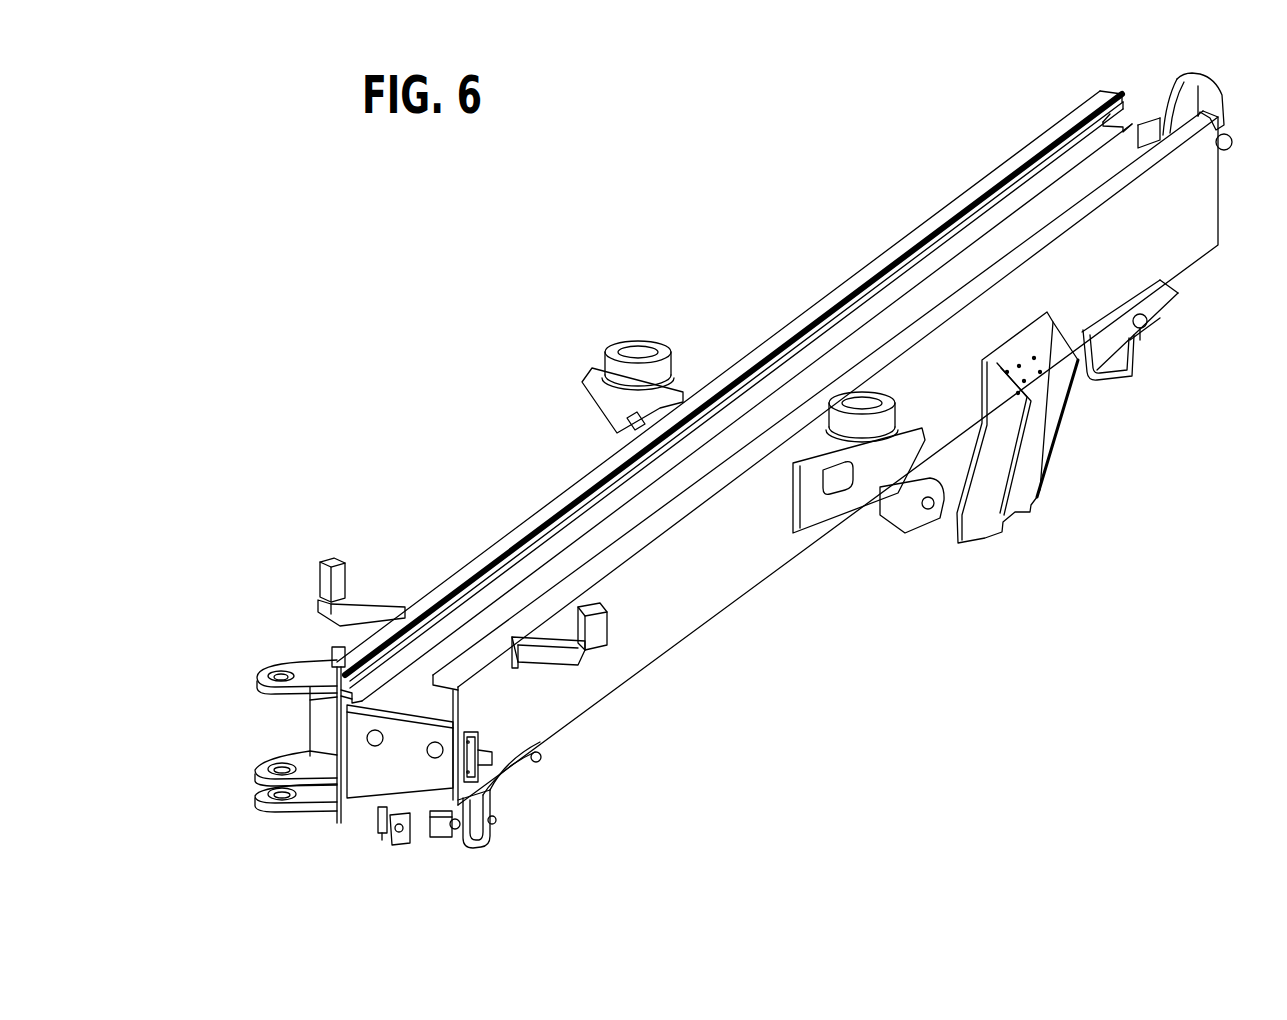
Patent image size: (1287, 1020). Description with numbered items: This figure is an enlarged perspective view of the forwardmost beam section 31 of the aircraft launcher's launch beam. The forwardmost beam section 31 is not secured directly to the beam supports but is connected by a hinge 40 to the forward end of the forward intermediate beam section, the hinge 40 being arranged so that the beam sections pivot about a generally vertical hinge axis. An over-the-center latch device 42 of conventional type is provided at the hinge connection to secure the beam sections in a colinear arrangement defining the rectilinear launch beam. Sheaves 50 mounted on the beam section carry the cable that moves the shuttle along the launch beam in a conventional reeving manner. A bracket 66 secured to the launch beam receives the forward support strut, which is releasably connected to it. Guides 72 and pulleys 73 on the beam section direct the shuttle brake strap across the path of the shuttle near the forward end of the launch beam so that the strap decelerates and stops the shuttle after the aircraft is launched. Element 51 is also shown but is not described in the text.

The forwardmost beam section 31 is at (818, 255).
The hinge 40 is at (262, 700).
The over-the-center latch device 42 is at (494, 750).
The sheave 50 is at (1100, 385).
The hanger bracket 51 is at (458, 850).
The bracket 66 is at (1052, 468).
The guide 72 is at (346, 568).
The pulley 73 is at (641, 340).